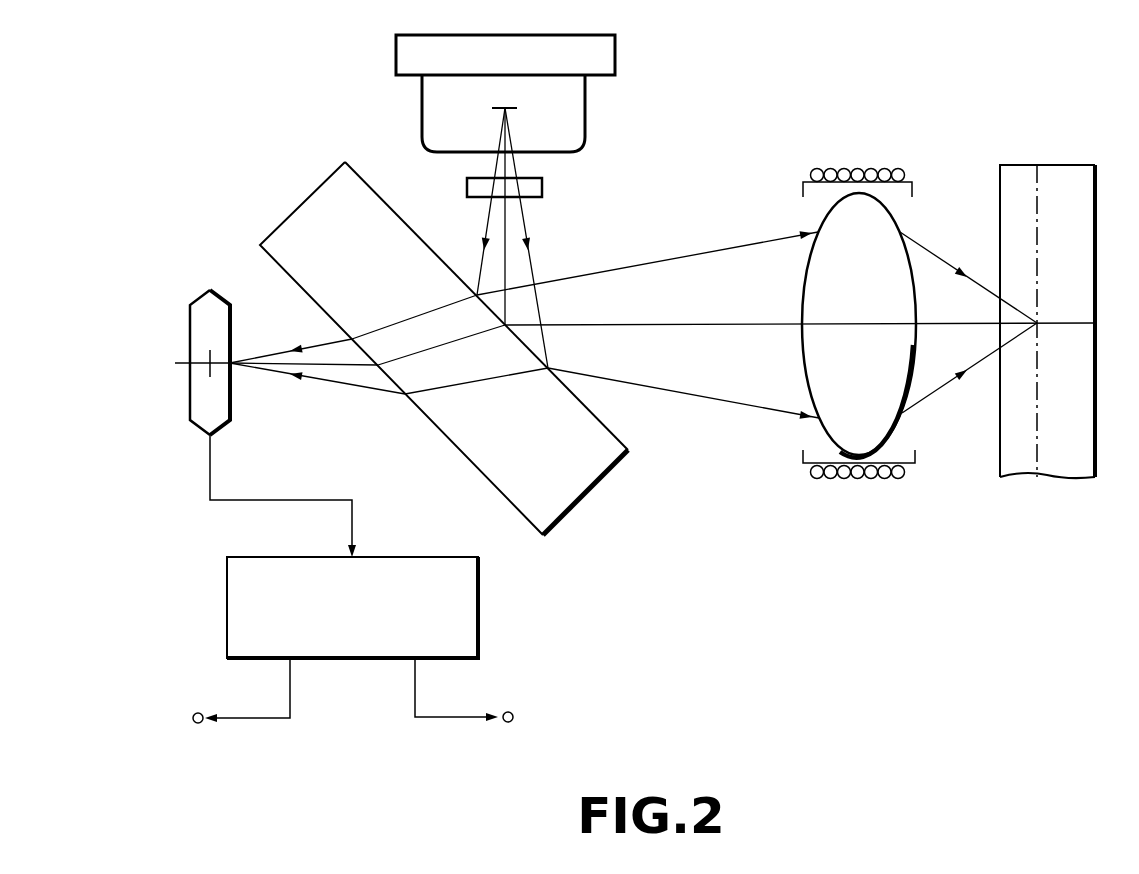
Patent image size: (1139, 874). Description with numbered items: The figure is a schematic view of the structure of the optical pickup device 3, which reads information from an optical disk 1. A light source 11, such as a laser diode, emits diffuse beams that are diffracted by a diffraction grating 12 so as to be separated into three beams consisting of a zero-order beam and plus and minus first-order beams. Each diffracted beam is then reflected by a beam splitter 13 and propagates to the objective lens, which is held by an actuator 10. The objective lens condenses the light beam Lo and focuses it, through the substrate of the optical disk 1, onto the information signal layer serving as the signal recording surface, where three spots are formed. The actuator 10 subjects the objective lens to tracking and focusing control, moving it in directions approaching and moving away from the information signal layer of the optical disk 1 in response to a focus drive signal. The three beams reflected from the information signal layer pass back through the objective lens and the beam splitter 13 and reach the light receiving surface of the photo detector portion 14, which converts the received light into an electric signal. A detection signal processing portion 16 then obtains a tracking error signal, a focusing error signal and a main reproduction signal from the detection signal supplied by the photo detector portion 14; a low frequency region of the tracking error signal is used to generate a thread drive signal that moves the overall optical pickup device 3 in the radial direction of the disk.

The optical disk 1 is at (1050, 165).
The optical pickup device 3 is at (716, 143).
The actuator 10 is at (808, 170).
The light source 11 is at (585, 115).
The diffraction grating 12 is at (542, 188).
The beam splitter 13 is at (628, 442).
The photo detector portion 14 is at (208, 290).
The detection signal processing portion 16 is at (422, 555).
The laser light beam Lo is at (722, 323).